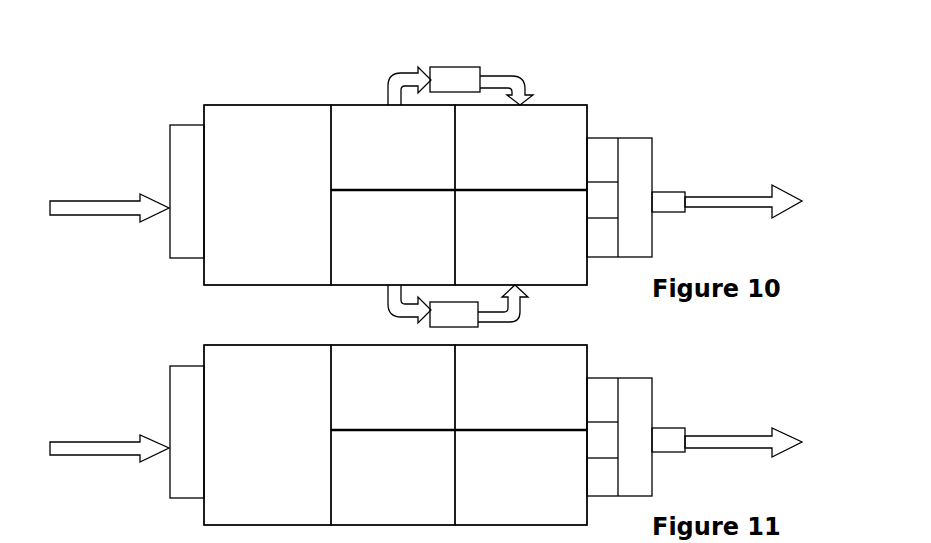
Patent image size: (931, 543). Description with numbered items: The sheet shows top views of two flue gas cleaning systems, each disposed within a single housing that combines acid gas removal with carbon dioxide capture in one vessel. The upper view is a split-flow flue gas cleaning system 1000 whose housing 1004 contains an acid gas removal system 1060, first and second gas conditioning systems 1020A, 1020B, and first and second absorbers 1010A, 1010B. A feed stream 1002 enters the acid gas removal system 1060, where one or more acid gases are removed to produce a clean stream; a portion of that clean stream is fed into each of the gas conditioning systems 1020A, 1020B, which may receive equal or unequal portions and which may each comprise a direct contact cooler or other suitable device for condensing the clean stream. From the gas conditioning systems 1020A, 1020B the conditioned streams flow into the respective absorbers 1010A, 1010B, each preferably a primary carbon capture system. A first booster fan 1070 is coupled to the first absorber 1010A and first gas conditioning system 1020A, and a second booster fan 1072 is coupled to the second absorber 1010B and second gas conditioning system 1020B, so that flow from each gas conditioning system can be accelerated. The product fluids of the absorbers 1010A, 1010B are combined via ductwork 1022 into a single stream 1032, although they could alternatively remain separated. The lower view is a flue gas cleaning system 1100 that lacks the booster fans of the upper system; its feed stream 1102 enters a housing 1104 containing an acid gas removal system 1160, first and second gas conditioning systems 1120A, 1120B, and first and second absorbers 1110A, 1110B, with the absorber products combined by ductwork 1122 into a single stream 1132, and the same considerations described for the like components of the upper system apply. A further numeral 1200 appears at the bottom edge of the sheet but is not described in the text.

In FIG. 10, the split-flow flue gas cleaning system 1000 is at (202, 90).
In FIG. 10, the feed stream 1002 is at (95, 193).
In FIG. 10, the housing 1004 is at (568, 102).
In FIG. 10, the ductwork 1022 is at (655, 133).
In FIG. 10, the single stream 1032 is at (743, 189).
In FIG. 10, the acid gas removal system 1060 is at (267, 195).
In FIG. 10, the second booster fan 1072 is at (438, 59).
In FIG. 10, the first booster fan 1070 is at (426, 330).
In FIG. 10, the first gas conditioning system 1020A is at (393, 147).
In FIG. 10, the second gas conditioning system 1020B is at (393, 237).
In FIG. 10, the first absorber 1010A is at (521, 147).
In FIG. 10, the second absorber 1010B is at (521, 237).
In FIG. 11, the flue gas cleaning system 1100 is at (135, 350).
In FIG. 11, the feed stream 1102 is at (95, 433).
In FIG. 11, the housing 1104 is at (567, 341).
In FIG. 11, the ductwork 1122 is at (657, 393).
In FIG. 11, the single stream 1132 is at (743, 427).
In FIG. 11, the acid gas removal system 1160 is at (267, 435).
In FIG. 11, the first gas conditioning system 1120A is at (393, 387).
In FIG. 11, the second gas conditioning system 1120B is at (393, 477).
In FIG. 11, the first absorber 1110A is at (521, 387).
In FIG. 11, the second absorber 1110B is at (521, 477).
In FIG. 11, the fluid treatment system 1200 is at (69, 538).